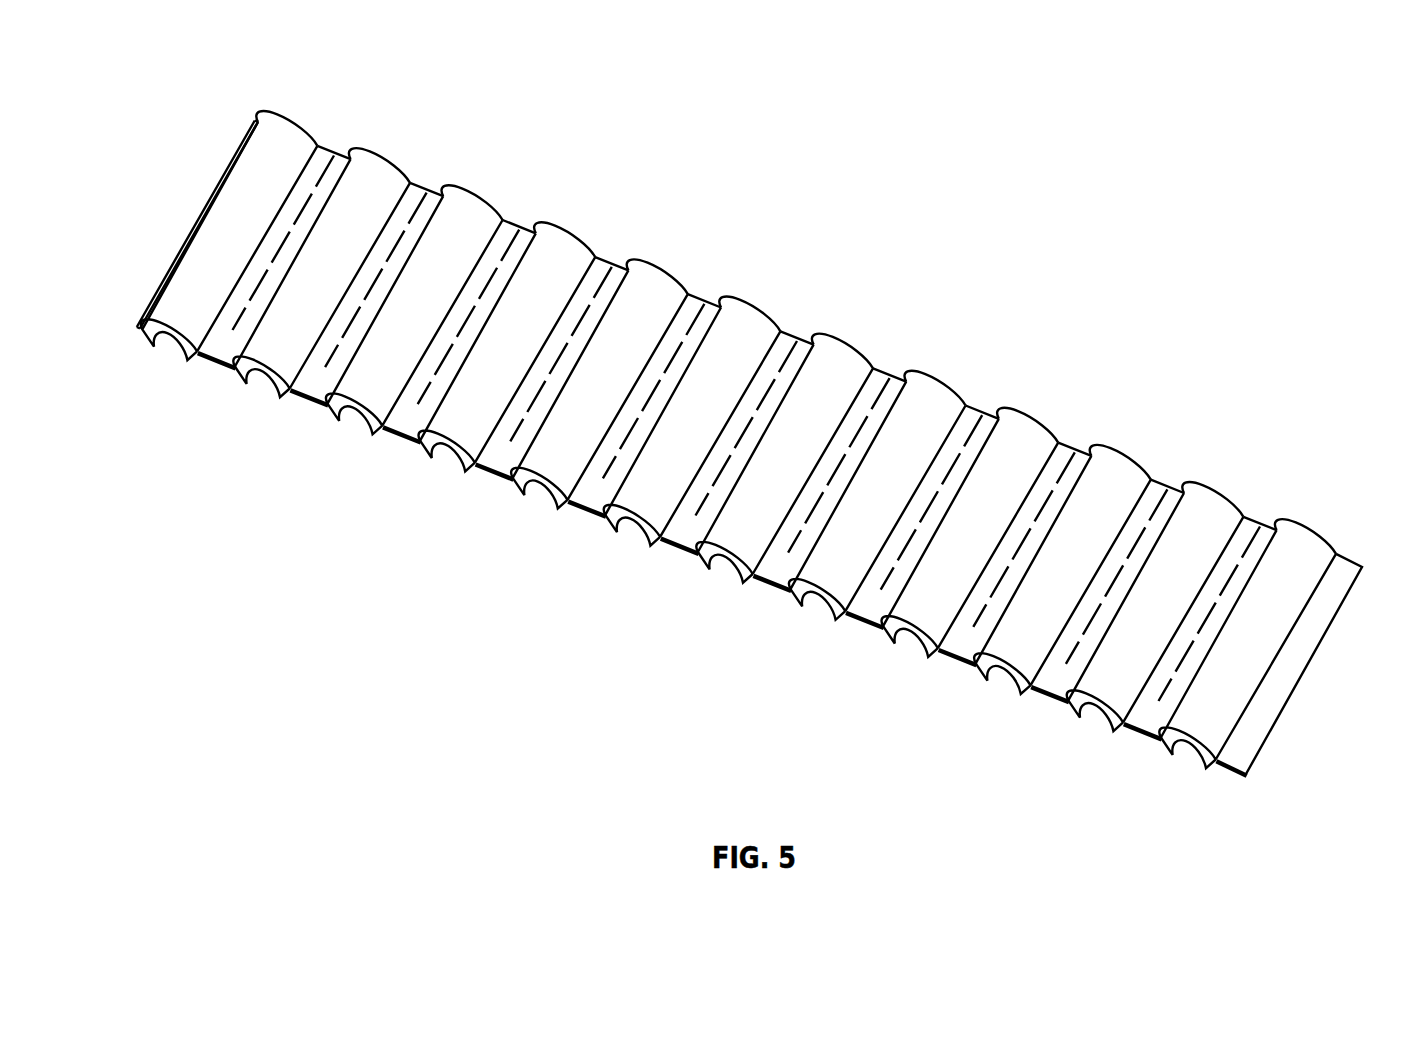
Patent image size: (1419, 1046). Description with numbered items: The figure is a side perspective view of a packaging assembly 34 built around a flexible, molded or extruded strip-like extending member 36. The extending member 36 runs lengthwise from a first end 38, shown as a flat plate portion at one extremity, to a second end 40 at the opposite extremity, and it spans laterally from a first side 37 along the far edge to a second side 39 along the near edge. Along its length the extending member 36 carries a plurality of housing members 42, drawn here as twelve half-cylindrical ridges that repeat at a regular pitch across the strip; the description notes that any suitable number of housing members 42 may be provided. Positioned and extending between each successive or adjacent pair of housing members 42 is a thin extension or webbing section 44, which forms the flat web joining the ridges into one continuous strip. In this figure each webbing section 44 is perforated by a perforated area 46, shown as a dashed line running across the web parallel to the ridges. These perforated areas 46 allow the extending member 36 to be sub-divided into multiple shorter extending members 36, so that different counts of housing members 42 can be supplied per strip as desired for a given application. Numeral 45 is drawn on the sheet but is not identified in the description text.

The packaging assembly 34 is at (912, 256).
The extending member 36 is at (690, 287).
The first side 37 is at (943, 366).
The first end 38 is at (1335, 669).
The second side 39 is at (765, 626).
The second end 40 is at (172, 222).
The housing member 42 is at (759, 408).
The webbing section 44 is at (730, 443).
The last flat portion 45 is at (1158, 728).
The perforated area 46 is at (334, 157).